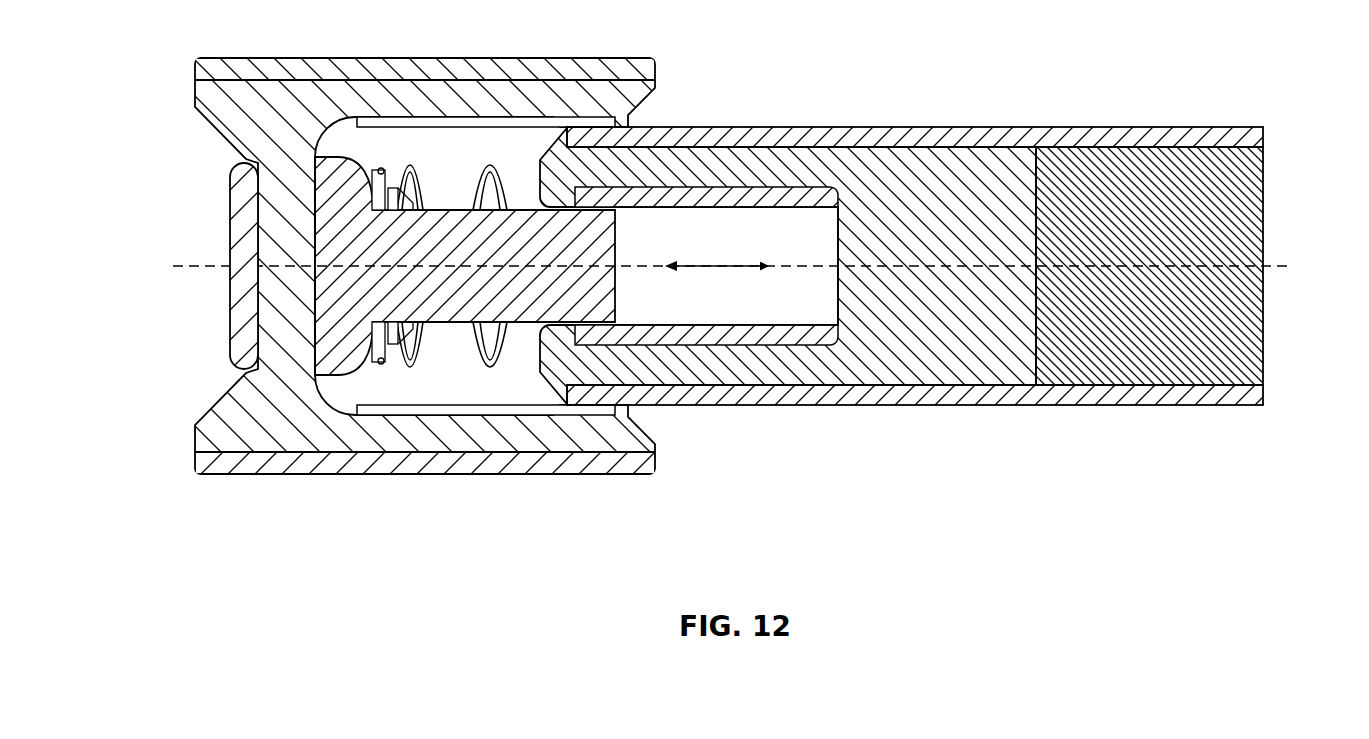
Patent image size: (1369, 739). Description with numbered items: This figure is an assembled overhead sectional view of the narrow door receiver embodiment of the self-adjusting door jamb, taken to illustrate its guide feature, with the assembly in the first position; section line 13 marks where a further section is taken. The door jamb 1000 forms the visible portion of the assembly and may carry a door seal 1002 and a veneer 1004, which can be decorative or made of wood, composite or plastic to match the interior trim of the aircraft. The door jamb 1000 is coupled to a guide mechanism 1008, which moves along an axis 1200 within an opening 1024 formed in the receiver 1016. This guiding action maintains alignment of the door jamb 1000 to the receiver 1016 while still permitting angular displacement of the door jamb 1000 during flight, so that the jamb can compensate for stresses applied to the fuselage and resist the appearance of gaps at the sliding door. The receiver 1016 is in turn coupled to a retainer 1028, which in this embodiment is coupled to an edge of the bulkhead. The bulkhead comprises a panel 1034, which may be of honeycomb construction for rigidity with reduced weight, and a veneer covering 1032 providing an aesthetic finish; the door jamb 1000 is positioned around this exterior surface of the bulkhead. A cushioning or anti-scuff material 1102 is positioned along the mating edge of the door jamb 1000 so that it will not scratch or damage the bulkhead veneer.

The door jamb 1000 is at (288, 103).
The door seal 1002 is at (246, 358).
The veneer 1004 is at (456, 460).
The guide mechanism 1008 is at (605, 286).
The receiver 1016 is at (779, 336).
The opening 1024 is at (711, 223).
The retainer 1028 is at (863, 163).
The veneer covering 1032 is at (972, 142).
The panel 1034 is at (1233, 157).
The cushioning or anti-scuff material 1102 is at (416, 120).
The axis 1200 is at (742, 263).
The section line for FIG. 13 is at (173, 266).